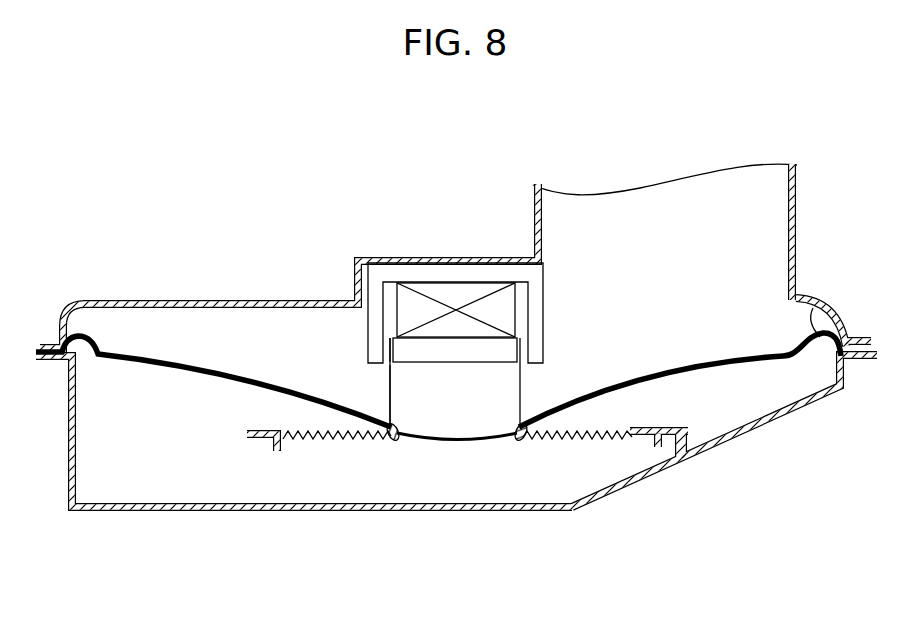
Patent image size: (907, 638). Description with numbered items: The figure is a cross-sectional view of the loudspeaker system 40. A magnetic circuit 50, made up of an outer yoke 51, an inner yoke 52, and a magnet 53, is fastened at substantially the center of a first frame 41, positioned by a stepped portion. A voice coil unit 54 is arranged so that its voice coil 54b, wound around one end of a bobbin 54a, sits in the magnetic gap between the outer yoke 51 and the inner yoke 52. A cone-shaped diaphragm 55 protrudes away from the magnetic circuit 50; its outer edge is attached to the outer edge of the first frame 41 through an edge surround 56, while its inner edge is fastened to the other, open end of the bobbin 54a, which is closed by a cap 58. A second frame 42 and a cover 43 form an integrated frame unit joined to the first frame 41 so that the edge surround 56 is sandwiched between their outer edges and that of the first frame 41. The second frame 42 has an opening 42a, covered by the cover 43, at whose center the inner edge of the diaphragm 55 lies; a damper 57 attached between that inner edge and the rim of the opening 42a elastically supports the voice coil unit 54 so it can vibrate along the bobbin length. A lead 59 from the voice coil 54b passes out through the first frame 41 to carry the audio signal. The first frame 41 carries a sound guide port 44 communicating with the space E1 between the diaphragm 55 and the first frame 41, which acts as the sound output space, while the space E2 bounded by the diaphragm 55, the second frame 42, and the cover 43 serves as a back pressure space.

The loudspeaker system 40 is at (860, 107).
The first frame 41 is at (150, 301).
The second frame 42 is at (747, 418).
The opening 42a is at (588, 456).
The cover 43 is at (425, 514).
The sound guide port 44 is at (795, 212).
The magnetic circuit 50 is at (404, 265).
The outer yoke 51 is at (530, 277).
The inner yoke 52 is at (480, 343).
The magnet 53 is at (453, 292).
The voice coil unit 54 is at (537, 391).
The bobbin 54a is at (407, 393).
The voice coil 54b is at (385, 355).
The diaphragm 55 is at (730, 360).
The edge surround 56 is at (821, 308).
The damper 57 is at (335, 432).
The cap 58 is at (437, 441).
The lead 59 is at (203, 367).
The space E1 is at (270, 323).
The space E2 is at (200, 478).